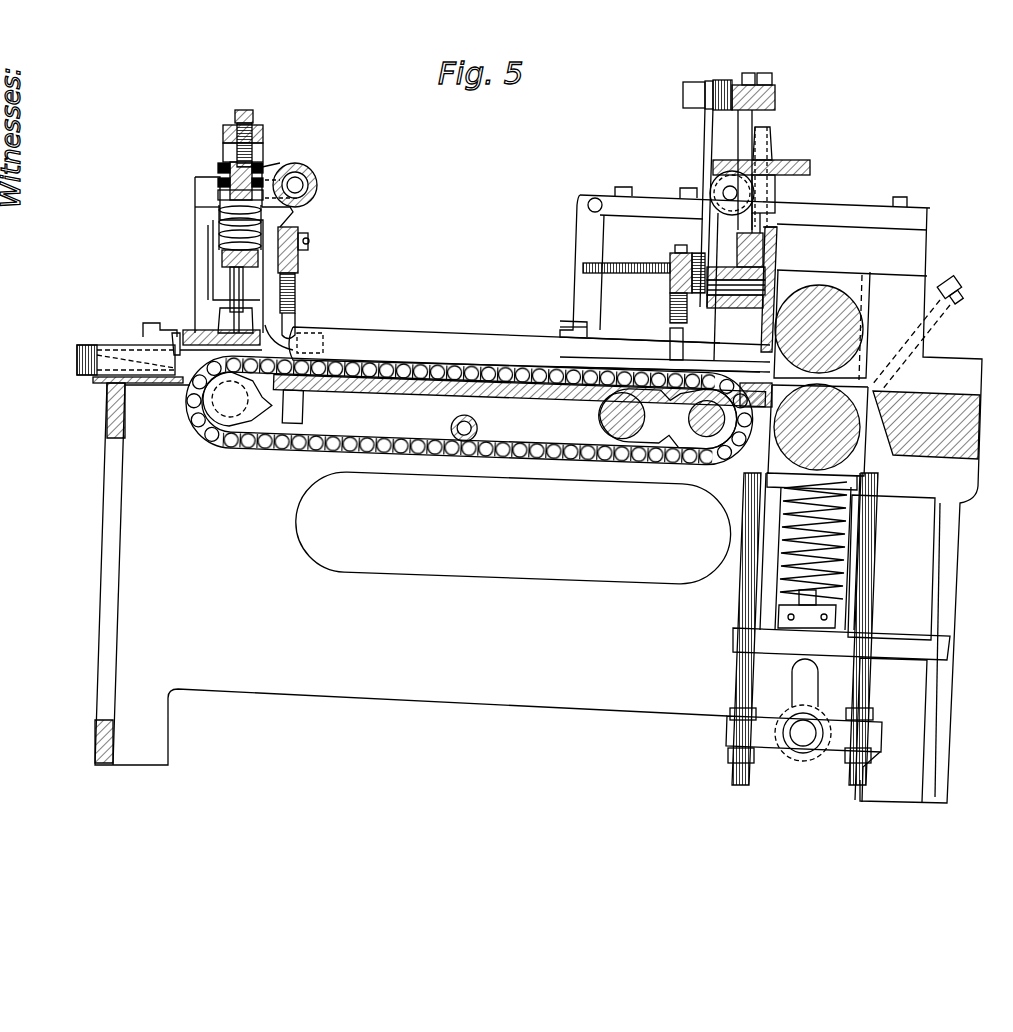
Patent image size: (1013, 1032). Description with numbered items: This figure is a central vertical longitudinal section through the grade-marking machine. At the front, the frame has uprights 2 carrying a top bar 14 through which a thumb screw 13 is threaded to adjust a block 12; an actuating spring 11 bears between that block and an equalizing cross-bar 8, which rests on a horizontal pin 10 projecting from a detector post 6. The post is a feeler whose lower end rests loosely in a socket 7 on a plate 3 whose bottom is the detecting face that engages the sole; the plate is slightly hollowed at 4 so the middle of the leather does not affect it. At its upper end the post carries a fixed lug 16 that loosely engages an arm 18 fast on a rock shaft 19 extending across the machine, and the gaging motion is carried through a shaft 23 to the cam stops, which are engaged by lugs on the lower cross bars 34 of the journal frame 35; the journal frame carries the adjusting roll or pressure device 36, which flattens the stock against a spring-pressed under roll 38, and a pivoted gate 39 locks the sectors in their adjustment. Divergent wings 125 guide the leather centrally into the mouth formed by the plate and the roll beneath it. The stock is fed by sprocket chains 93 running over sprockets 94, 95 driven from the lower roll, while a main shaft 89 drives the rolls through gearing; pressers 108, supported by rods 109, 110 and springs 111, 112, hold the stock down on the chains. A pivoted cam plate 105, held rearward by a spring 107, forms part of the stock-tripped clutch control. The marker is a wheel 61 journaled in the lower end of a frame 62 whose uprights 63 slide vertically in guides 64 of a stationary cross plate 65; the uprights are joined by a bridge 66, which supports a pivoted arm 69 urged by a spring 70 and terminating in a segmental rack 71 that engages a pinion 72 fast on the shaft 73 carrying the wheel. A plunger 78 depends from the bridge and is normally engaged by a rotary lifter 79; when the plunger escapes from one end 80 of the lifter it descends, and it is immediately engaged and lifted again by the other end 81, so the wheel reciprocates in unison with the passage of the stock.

The uprights 2 is at (197, 242).
The plate 3 is at (190, 330).
The hollowed portion 4 is at (172, 332).
The detector post 6 is at (234, 286).
The sockets 7 is at (246, 325).
The equalizing cross-bar 8 is at (222, 258).
The horizontal pin 10 is at (222, 266).
The actuating spring 11 is at (220, 203).
The block 12 is at (226, 166).
The thumb screw 13 is at (232, 131).
The top bar 14 is at (222, 140).
The lug 16 is at (218, 173).
The arm 18 is at (278, 172).
The rock shaft 19 is at (318, 185).
The shaft 23 is at (474, 414).
The lower cross bar 34 is at (842, 750).
The journal frame 35 is at (878, 572).
The adjusting roll 36 is at (832, 330).
The under roll 38 is at (842, 468).
The gate 39 is at (172, 348).
The marking wheel 61 is at (764, 335).
The frame 62 is at (777, 255).
The uprights 63 is at (777, 229).
The guides 64 is at (772, 150).
The cross plate 65 is at (810, 167).
The bridge 66 is at (775, 97).
The pivoted arm 69 is at (704, 143).
The spring 70 is at (722, 84).
The segmental rack 71 is at (688, 254).
The pinion 72 is at (701, 296).
The shaft 73 is at (727, 308).
The plunger 78 is at (752, 140).
The rotary lifter 79 is at (716, 186).
The end of lifter 80 is at (740, 193).
The end of lifter 81 is at (775, 205).
The main shaft 89 is at (598, 404).
The sprocket chains 93 is at (286, 449).
The sprocket 94 is at (212, 402).
The sprocket 95 is at (708, 434).
The pivoted plate 105 is at (585, 330).
The spring 107 is at (634, 274).
The pressers 108 is at (462, 333).
The rod 109 is at (298, 328).
The rod 110 is at (668, 346).
The spring 111 is at (298, 296).
The spring 112 is at (668, 318).
The divergent wings 125 is at (77, 357).